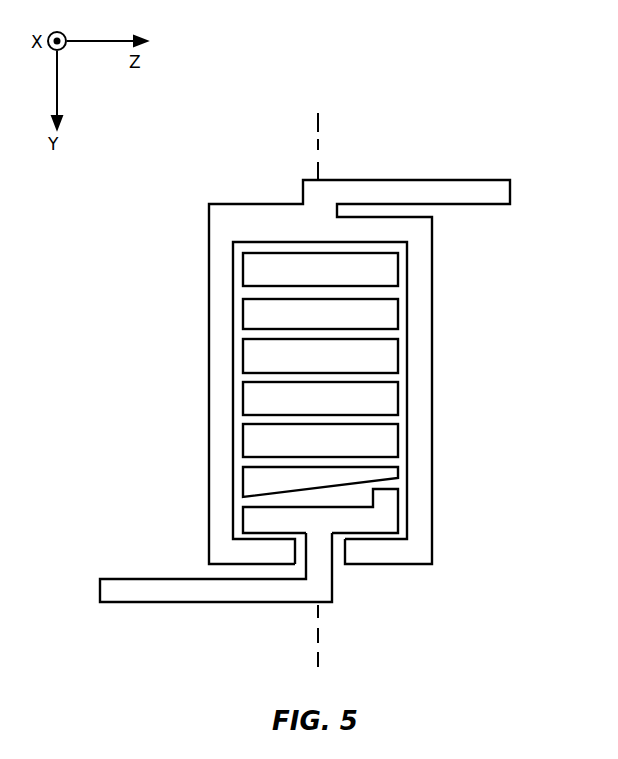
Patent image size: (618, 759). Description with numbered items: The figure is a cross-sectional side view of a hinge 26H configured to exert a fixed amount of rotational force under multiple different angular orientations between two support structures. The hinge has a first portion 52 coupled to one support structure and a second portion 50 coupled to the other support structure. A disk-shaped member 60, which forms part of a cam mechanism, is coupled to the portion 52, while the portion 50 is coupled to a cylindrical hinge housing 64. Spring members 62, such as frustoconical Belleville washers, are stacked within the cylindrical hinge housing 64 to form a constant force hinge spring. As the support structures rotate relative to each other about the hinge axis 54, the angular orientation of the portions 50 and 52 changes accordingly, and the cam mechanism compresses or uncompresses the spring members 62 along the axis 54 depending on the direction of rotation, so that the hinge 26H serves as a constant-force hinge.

The hinge 26H is at (427, 92).
The portion 50 is at (500, 191).
The portion 52 is at (105, 589).
The hinge axis 54 is at (320, 145).
The disk-shaped member 60 is at (250, 519).
The spring members 62 is at (248, 319).
The cylindrical hinge housing 64 is at (220, 470).